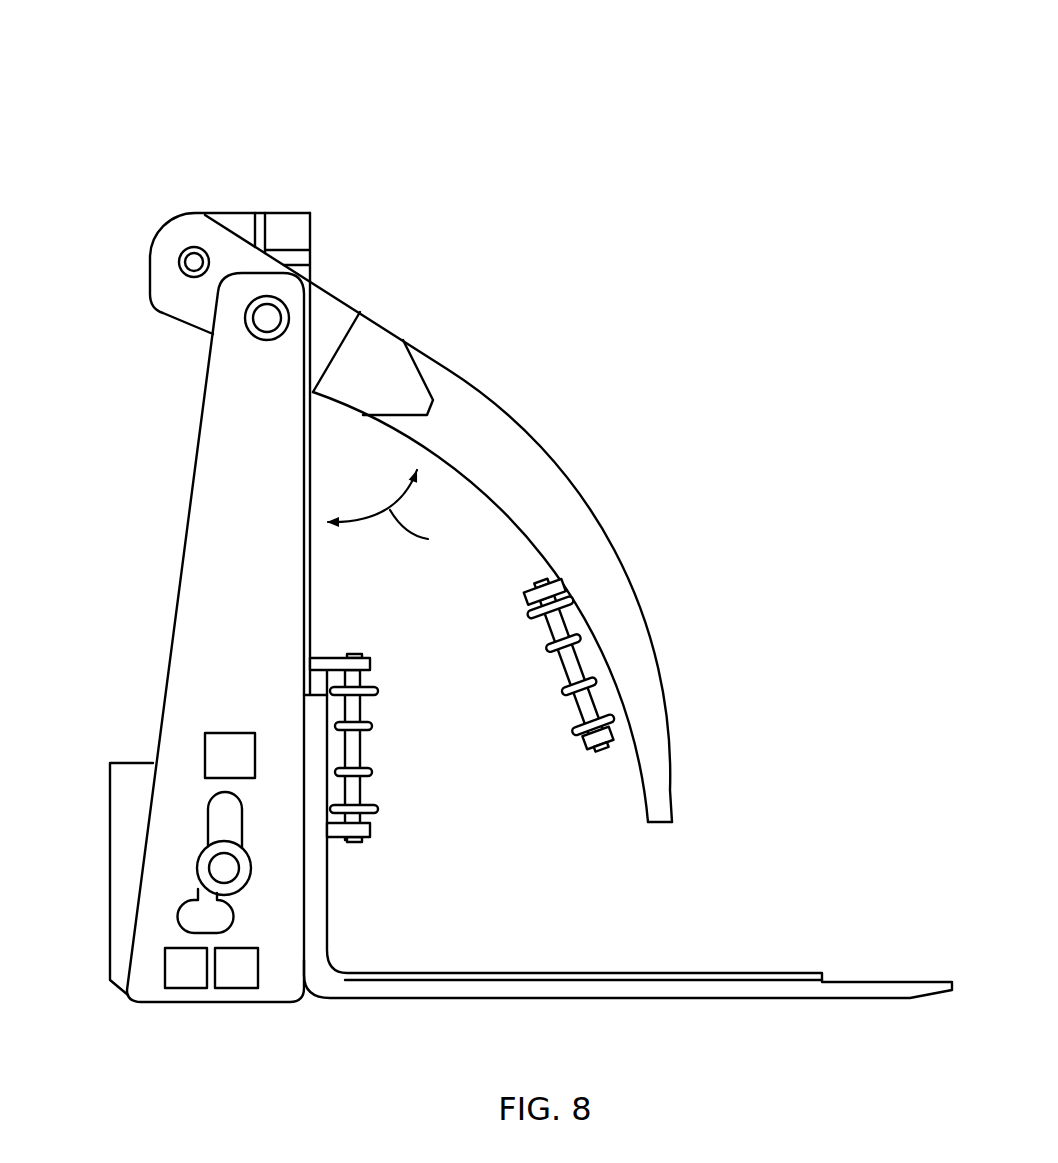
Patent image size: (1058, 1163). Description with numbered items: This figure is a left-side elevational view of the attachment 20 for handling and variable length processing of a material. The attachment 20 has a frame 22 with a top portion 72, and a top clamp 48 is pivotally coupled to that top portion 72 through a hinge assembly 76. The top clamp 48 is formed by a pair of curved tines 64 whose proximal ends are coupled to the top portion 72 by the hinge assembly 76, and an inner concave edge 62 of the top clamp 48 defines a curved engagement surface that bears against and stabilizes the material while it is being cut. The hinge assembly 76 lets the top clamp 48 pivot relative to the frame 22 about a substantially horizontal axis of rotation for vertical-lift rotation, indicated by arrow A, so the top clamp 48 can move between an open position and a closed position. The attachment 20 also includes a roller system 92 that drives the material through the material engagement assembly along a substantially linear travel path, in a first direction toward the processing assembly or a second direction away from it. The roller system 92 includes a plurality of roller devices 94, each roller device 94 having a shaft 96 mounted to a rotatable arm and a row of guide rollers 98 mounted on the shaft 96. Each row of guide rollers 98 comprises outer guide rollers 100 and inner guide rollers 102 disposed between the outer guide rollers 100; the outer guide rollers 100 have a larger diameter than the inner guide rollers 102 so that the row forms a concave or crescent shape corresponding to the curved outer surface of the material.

The attachment 20 is at (182, 82).
The frame 22 is at (213, 470).
The top clamp 48 is at (483, 432).
The inner concave edge 62 is at (612, 690).
The curved tines 64 is at (575, 522).
The top portion 72 is at (233, 305).
The hinge assembly 76 is at (267, 313).
The roller system 92 is at (540, 842).
The roller device 94 is at (349, 684).
The shaft 96 is at (353, 747).
The row of guide rollers 98 is at (362, 807).
The outer guide rollers 100 is at (340, 673).
The inner guide rollers 102 is at (366, 728).